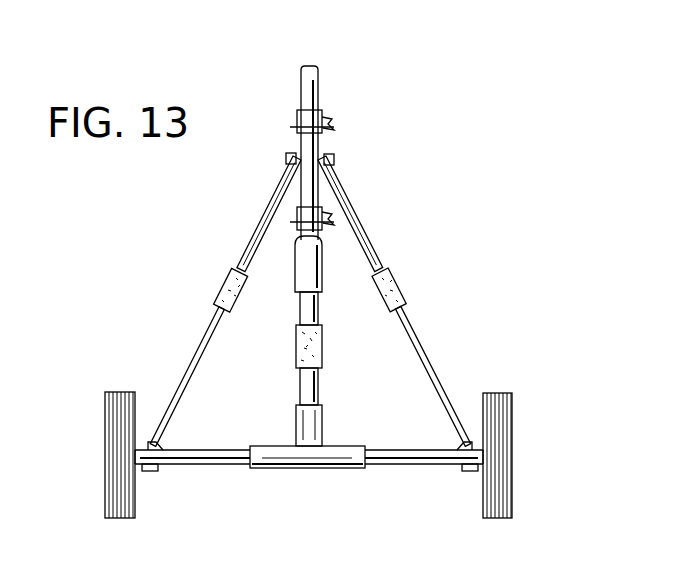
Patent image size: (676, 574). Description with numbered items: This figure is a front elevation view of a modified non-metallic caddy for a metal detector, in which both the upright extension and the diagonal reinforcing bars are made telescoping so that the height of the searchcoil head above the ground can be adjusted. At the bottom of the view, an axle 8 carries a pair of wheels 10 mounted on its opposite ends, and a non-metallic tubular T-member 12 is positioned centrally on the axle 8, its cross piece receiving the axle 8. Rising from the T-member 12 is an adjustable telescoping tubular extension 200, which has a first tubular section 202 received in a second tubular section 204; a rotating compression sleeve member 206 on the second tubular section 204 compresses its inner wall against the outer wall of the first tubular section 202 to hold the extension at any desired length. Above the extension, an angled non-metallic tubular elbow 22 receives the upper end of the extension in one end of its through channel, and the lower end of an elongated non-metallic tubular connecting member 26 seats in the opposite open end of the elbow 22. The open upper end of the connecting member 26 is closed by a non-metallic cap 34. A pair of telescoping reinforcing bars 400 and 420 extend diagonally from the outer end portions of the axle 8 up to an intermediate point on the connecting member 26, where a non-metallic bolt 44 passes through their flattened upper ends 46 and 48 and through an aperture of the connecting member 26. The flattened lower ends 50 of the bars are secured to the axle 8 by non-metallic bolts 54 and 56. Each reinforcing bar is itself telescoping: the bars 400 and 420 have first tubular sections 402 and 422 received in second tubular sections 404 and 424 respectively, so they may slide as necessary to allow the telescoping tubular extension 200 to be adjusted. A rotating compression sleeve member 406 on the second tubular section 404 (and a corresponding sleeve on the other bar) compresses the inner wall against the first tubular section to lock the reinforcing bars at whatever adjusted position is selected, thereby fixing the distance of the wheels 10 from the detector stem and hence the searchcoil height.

The axle 8 is at (420, 464).
The wheels 10 is at (497, 393).
The tubular T-member 12 is at (277, 458).
The tubular elbow 22 is at (297, 275).
The tubular connecting member 26 is at (318, 100).
The cap 34 is at (306, 66).
The bolt 44 is at (334, 160).
The flattened upper end 46 is at (290, 153).
The flattened upper end 48 is at (326, 154).
The flattened lower end 50 is at (160, 446).
The bolt 54 is at (150, 471).
The bolt 56 is at (470, 471).
The telescoping tubular extension 200 is at (318, 348).
The first tubular section 202 is at (318, 385).
The second tubular section 204 is at (318, 312).
The compression sleeve member 206 is at (296, 342).
The telescoping reinforcing bar 400 is at (209, 301).
The first tubular section 402 is at (200, 353).
The second tubular section 404 is at (262, 222).
The compression sleeve member 406 is at (233, 268).
The telescoping reinforcing bar 420 is at (420, 301).
The first tubular section 422 is at (420, 352).
The second tubular section 424 is at (362, 228).